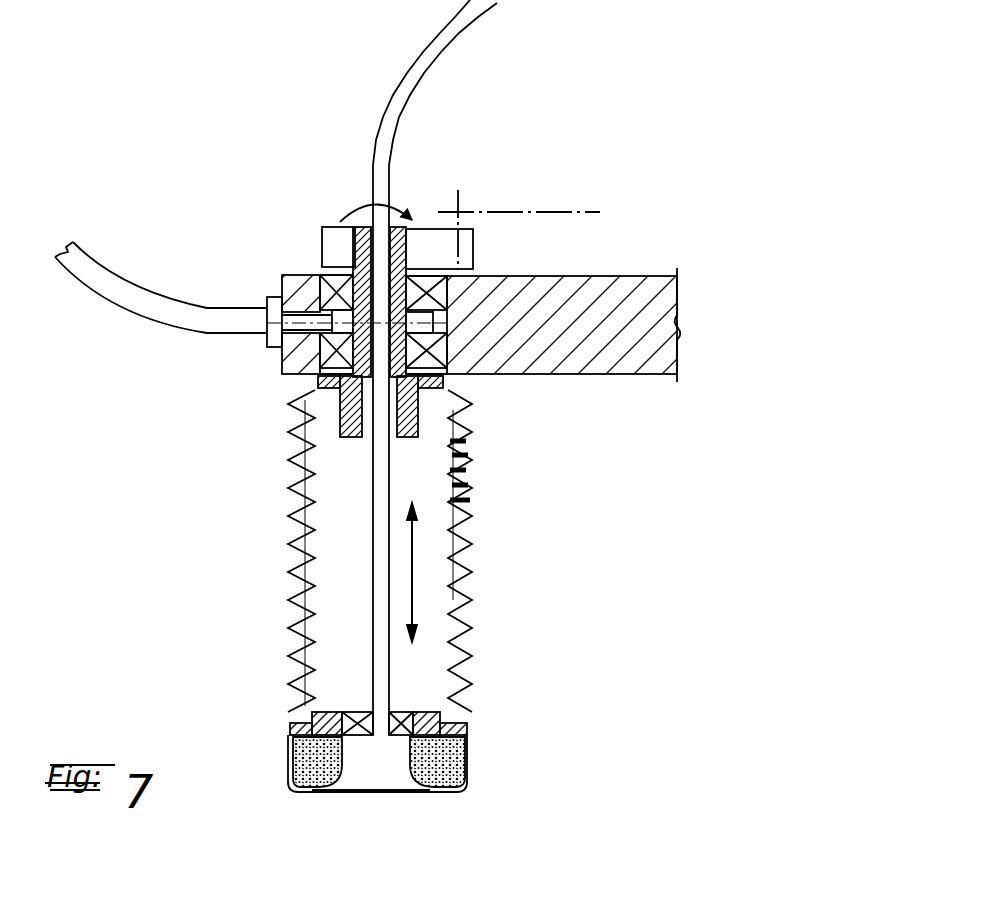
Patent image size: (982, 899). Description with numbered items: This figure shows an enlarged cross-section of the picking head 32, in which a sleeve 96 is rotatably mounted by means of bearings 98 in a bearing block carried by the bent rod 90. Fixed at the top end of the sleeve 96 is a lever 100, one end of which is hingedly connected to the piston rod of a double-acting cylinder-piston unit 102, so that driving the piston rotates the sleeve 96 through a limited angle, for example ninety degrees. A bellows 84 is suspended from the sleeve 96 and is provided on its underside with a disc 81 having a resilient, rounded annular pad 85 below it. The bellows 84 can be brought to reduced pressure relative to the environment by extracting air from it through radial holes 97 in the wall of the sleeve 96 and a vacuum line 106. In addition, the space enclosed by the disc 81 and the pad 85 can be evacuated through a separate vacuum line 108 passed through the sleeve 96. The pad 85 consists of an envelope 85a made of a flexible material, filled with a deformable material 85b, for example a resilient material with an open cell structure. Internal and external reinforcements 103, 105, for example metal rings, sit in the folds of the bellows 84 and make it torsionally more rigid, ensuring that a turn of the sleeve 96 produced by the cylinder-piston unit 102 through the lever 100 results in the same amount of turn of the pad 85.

The marking unit 32 is at (260, 152).
The vacuum line 108 is at (437, 47).
The double-acting cylinder-piston unit 102 is at (508, 210).
The lever 100 is at (433, 253).
The radial holes 97 is at (338, 316).
The vacuum line 106 is at (237, 308).
The bent rod 90 is at (598, 358).
The sleeve 96 is at (340, 412).
The bearings 98 is at (450, 363).
The internal reinforcements 103 is at (463, 443).
The external reinforcements 105 is at (462, 487).
The bellows 84 is at (463, 573).
The disc 81 is at (290, 723).
The annular pad 85 is at (483, 780).
The envelope 85a is at (427, 780).
The deformable material 85b is at (310, 790).